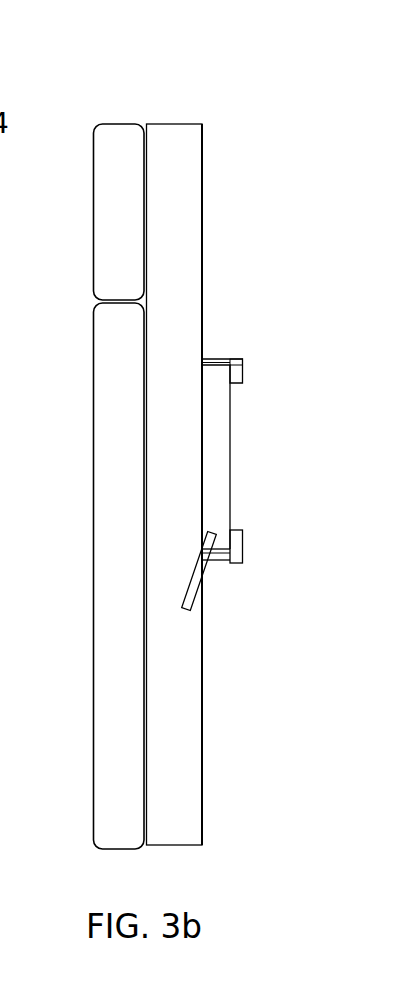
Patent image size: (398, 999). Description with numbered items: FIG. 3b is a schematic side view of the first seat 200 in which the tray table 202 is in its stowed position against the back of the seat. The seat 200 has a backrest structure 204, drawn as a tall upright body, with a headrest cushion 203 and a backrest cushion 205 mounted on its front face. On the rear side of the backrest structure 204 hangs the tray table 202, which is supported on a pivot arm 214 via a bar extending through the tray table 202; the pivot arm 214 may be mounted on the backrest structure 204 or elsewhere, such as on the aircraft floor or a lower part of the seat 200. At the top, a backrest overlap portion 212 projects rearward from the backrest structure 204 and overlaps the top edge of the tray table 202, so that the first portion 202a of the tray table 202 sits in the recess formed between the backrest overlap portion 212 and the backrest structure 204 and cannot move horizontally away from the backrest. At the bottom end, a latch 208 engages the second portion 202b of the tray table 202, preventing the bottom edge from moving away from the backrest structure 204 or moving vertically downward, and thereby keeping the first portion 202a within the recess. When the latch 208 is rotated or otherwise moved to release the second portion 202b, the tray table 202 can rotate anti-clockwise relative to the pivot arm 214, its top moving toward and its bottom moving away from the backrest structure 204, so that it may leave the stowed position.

The seat 200 is at (163, 101).
The tray table 202 is at (230, 430).
The first portion of the tray table 202a is at (217, 371).
The second portion of the tray table 202b is at (223, 540).
The headrest cushion 203 is at (107, 207).
The backrest structure 204 is at (183, 197).
The backrest cushion 205 is at (105, 470).
The latch 208 is at (242, 553).
The backrest overlap portion 212 is at (238, 358).
The pivot arm 214 is at (203, 570).